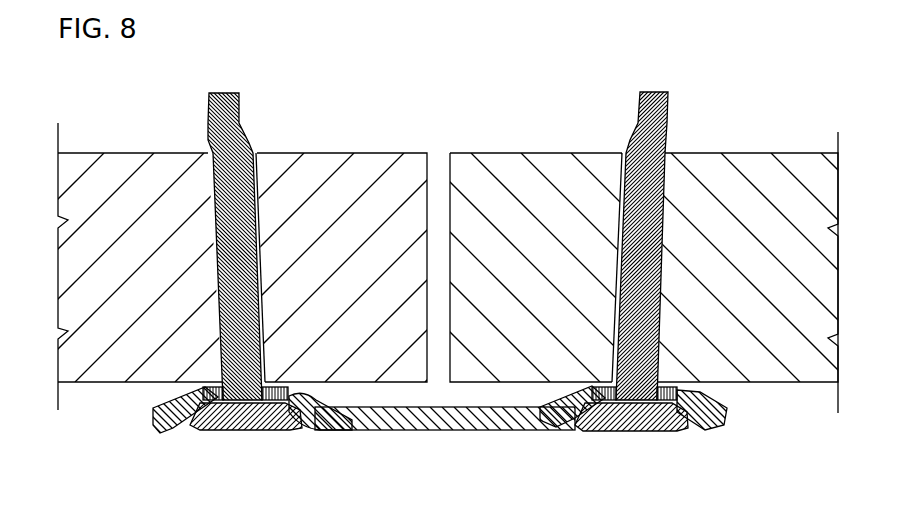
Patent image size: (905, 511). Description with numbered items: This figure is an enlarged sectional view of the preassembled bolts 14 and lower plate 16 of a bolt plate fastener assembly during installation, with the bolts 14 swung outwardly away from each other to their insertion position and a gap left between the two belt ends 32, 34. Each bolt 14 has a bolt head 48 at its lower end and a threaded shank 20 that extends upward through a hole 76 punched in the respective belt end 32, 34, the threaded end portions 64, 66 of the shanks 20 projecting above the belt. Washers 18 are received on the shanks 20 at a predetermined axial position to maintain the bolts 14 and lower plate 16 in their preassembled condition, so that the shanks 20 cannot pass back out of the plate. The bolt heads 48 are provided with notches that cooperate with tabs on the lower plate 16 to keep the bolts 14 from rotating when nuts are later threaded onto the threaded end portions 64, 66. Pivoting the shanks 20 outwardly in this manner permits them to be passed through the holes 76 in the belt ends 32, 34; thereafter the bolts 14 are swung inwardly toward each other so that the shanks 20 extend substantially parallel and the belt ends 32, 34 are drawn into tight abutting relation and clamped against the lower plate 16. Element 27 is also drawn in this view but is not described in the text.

The bolt 14 is at (190, 248).
The lower plate 16 is at (386, 420).
The washer 18 is at (300, 431).
The shank 20 is at (246, 151).
The outer flange 27 is at (576, 430).
The belt end 32 is at (418, 208).
The belt end 34 is at (465, 212).
The bolt head 48 is at (228, 431).
The threaded end portion 64 is at (232, 127).
The threaded end portion 66 is at (662, 146).
The hole 76 is at (254, 148).